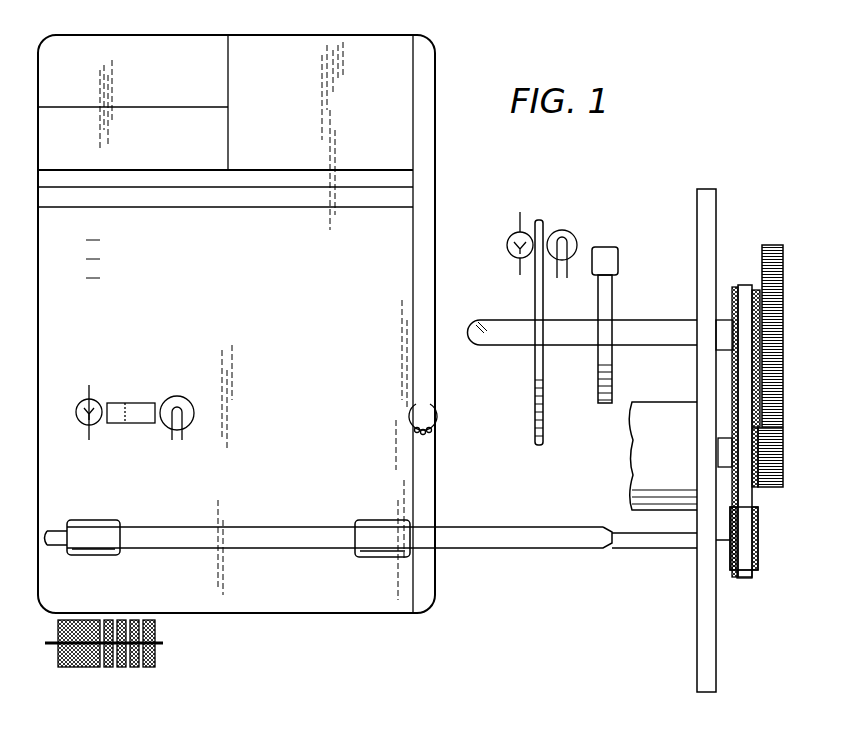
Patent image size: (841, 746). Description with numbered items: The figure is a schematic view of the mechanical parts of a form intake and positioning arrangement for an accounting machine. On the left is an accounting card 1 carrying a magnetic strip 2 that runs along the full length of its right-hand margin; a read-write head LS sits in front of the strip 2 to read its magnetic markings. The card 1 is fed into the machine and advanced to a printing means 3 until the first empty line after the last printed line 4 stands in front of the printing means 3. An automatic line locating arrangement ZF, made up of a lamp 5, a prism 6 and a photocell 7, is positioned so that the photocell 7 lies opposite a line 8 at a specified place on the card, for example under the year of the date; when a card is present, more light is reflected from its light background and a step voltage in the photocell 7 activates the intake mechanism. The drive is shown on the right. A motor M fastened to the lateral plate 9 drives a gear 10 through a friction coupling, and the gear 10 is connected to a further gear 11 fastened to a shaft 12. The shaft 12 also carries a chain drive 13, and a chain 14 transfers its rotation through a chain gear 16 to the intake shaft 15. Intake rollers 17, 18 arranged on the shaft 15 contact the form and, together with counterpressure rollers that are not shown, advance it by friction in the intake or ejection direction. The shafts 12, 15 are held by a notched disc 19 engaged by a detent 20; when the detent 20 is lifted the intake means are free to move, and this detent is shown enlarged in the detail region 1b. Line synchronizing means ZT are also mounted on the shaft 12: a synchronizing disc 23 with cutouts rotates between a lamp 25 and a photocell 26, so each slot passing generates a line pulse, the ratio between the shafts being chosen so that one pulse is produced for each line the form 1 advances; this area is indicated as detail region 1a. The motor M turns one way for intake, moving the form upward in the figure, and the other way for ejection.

The accounting card 1 is at (381, 48).
The magnetic strip 2 is at (431, 80).
The printing means 3 is at (160, 663).
The last printed line 4 is at (147, 277).
The lamp 5 is at (186, 404).
The prism 6 is at (140, 405).
The photocell 7 is at (81, 405).
The line 8 is at (92, 280).
The lateral plate 9 is at (706, 228).
The gear 10 is at (770, 460).
The gear 11 is at (775, 298).
The shaft 12 is at (572, 330).
The chain drive 13 is at (729, 296).
The chain 14 is at (742, 393).
The intake shaft 15 is at (643, 545).
The chain gear 16 is at (757, 540).
The intake roller 17 is at (378, 524).
The intake roller 18 is at (105, 522).
The notched disc 19 is at (609, 286).
The detent 20 is at (606, 250).
The synchronizing disc 23 is at (535, 428).
The lamp 25 is at (569, 236).
The photocell 26 is at (508, 244).
The motor M is at (643, 412).
The read-write head LS is at (410, 408).
The optical arrangement ZF is at (117, 393).
The line synchronizing means ZT is at (530, 372).
The detail region 1a is at (587, 398).
The detail region 1b is at (620, 305).